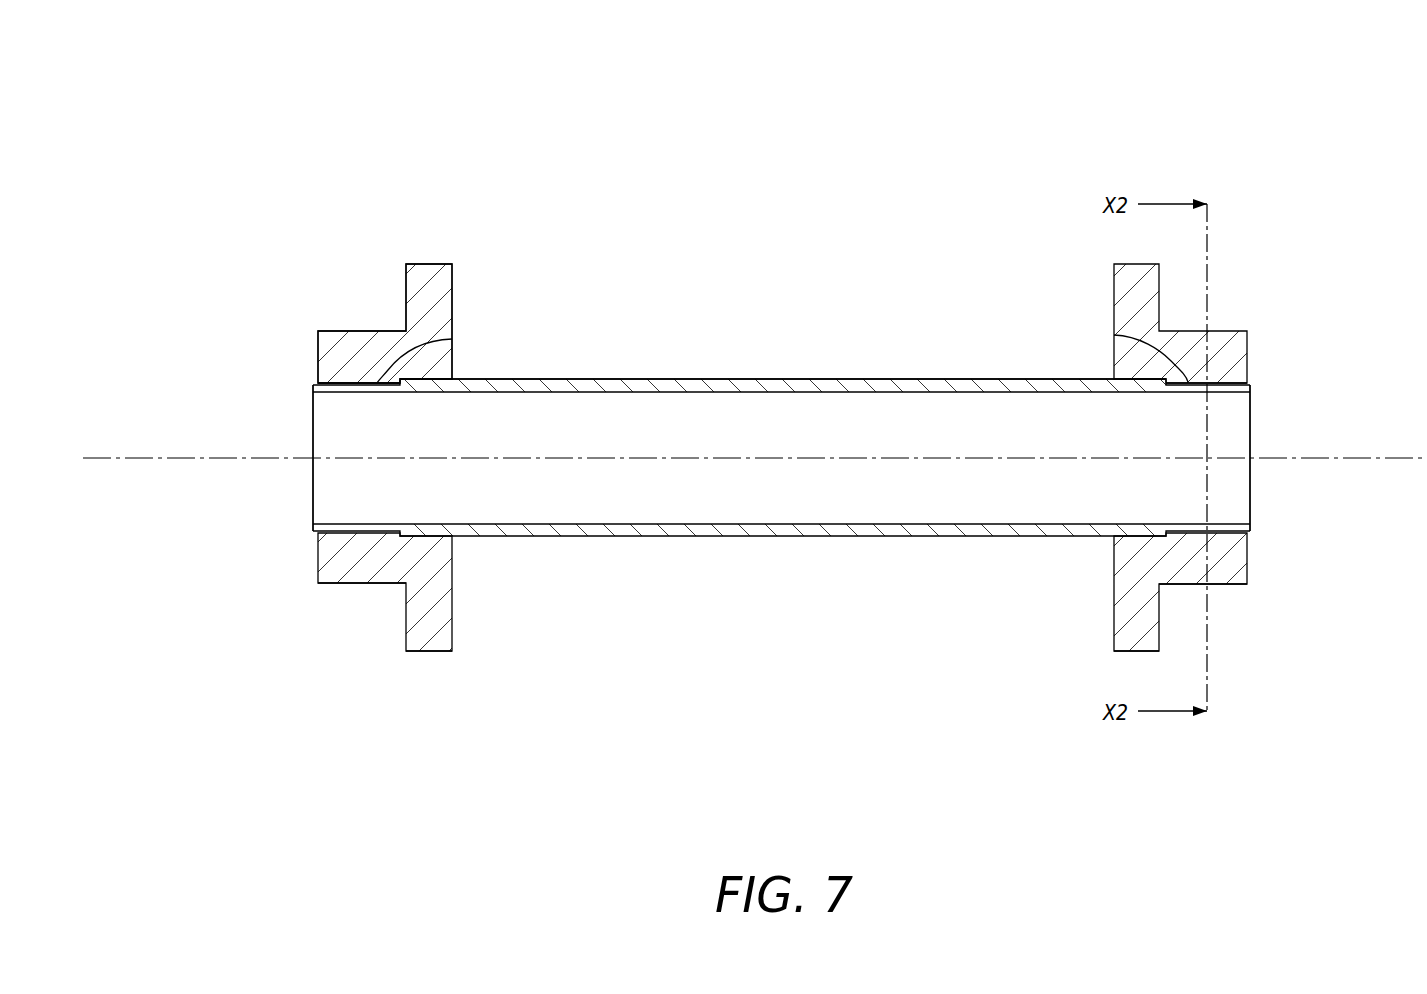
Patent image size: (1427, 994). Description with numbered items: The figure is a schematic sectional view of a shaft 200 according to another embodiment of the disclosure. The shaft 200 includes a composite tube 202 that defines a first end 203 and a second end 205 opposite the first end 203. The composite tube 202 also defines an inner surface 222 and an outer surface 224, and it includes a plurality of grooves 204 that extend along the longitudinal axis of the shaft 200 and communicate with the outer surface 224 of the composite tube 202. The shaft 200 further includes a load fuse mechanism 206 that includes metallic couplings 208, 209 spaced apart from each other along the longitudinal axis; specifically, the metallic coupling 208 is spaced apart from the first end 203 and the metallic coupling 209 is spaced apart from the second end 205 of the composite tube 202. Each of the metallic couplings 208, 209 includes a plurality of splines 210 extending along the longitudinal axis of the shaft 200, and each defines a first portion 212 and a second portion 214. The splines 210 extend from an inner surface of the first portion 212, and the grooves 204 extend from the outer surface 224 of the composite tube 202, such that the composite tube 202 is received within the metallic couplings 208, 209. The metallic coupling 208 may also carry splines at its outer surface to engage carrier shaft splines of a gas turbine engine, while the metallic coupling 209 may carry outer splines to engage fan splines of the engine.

The shaft 200 is at (1293, 93).
The composite tube 202 is at (782, 367).
The first end 203 is at (1285, 543).
The grooves 204 is at (350, 382).
The second end 205 is at (277, 540).
The load fuse mechanism 206 is at (308, 283).
The metallic coupling 208 is at (1235, 317).
The metallic coupling 209 is at (357, 316).
The splines 210 is at (452, 339).
The first portion 212 is at (358, 585).
The second portion 214 is at (428, 652).
The inner surface 222 is at (585, 392).
The outer surface 224 is at (588, 379).